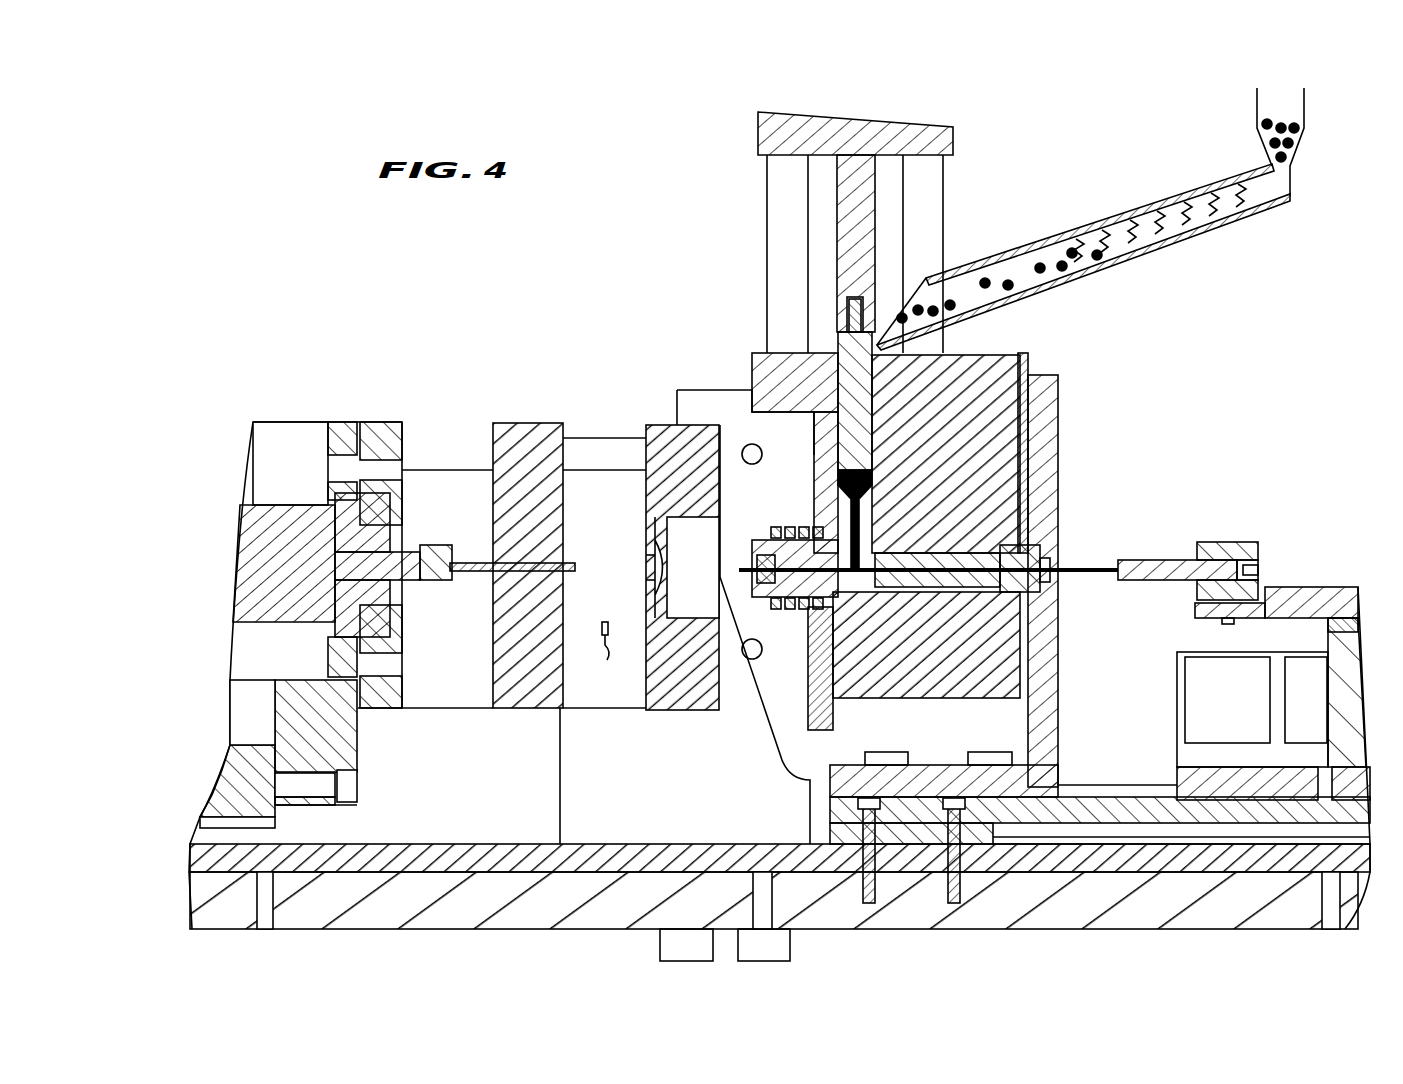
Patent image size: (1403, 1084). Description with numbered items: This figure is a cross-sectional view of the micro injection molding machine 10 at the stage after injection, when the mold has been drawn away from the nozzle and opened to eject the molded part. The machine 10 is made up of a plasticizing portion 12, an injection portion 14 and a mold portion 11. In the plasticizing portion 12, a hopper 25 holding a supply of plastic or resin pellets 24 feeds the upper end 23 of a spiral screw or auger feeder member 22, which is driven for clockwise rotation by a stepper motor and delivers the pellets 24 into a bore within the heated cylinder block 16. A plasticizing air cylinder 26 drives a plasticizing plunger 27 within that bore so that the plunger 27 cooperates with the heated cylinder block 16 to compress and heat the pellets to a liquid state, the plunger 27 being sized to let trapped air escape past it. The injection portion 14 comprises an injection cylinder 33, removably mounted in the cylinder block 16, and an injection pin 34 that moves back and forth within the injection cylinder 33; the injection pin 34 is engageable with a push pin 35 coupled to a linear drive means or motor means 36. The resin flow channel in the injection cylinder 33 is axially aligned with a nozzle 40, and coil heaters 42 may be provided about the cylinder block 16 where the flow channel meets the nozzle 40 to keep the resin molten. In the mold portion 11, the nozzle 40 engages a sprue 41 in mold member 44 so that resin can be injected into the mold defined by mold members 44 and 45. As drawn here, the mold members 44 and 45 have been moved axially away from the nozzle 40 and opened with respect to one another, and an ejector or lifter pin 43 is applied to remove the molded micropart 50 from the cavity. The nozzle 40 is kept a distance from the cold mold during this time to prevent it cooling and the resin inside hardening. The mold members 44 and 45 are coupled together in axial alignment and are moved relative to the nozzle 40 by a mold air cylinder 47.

The micro injection molding machine 10 is at (625, 330).
The mold portion 11 is at (458, 428).
The plasticizing portion 12 is at (1052, 355).
The injection portion 14 is at (1128, 548).
The heated cylinder block 16 is at (985, 412).
The spiral screw or auger feeder member 22 is at (1178, 205).
The upper end of the spiral screw member 23 is at (1292, 197).
The plastic or resin pellets 24 is at (1062, 262).
The hopper 25 is at (1296, 114).
The plasticizing air cylinder 26 is at (800, 135).
The plasticizing plunger 27 is at (855, 360).
The injection cylinder 33 is at (1013, 563).
The injection pin 34 is at (1074, 572).
The push pin 35 is at (1140, 578).
The linear drive means or motor means 36 is at (1265, 550).
The nozzle 40 is at (757, 562).
The sprue 41 is at (637, 563).
The coil heaters 42 is at (790, 525).
The ejector or lifter pin 43 is at (655, 595).
The mold member 44 is at (672, 450).
The mold member 45 is at (525, 700).
The mold air cylinder 47 is at (258, 570).
The molded micropart 50 is at (606, 650).